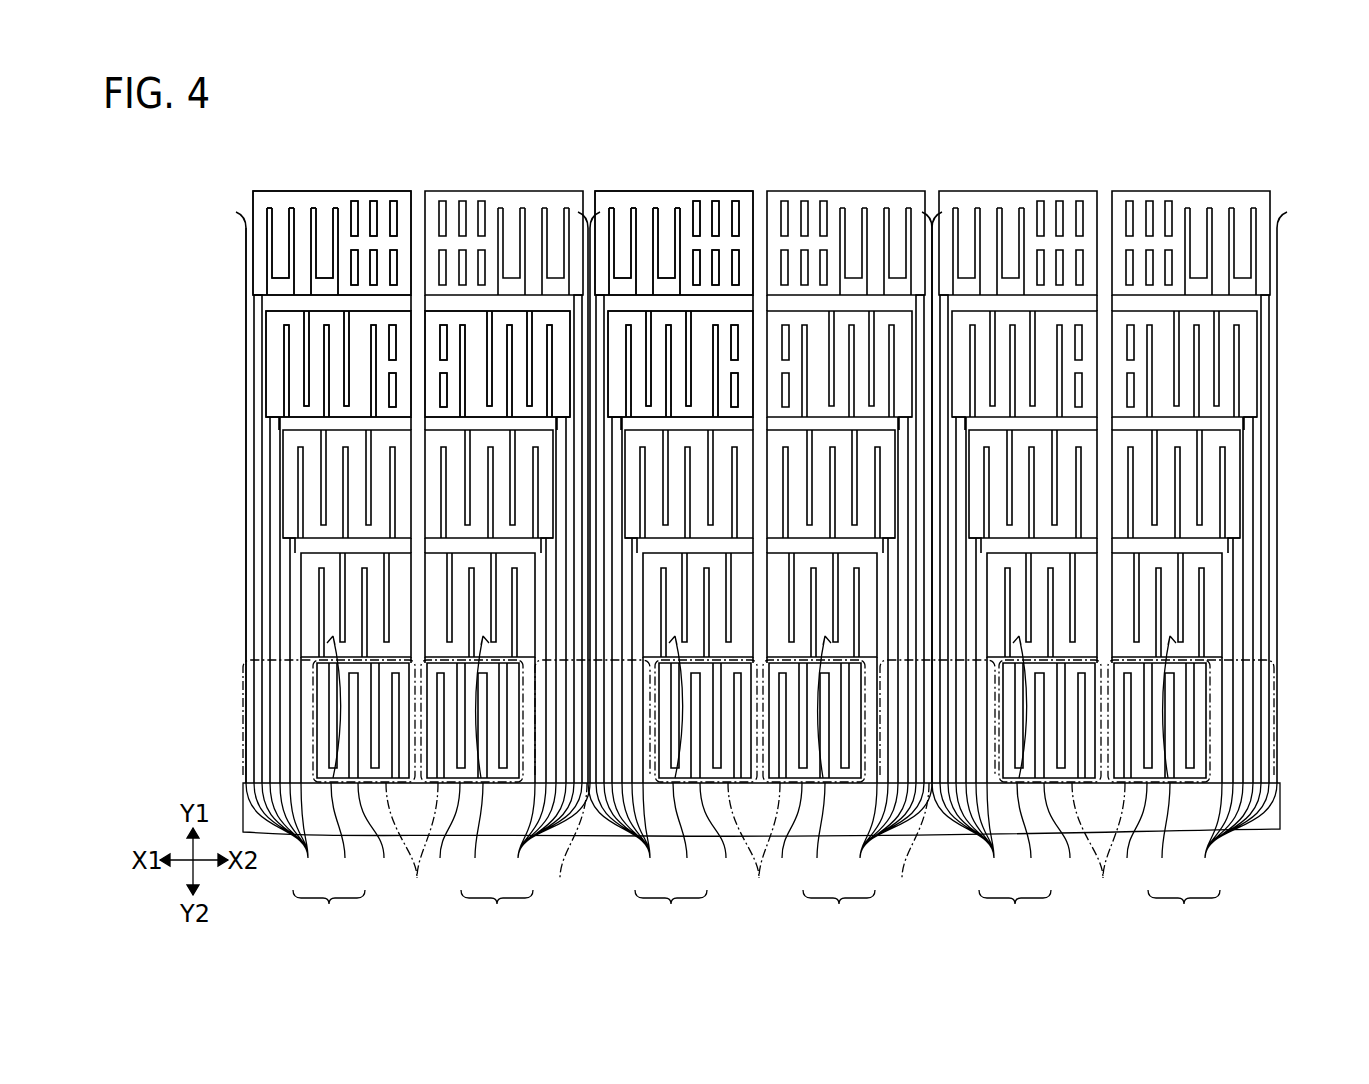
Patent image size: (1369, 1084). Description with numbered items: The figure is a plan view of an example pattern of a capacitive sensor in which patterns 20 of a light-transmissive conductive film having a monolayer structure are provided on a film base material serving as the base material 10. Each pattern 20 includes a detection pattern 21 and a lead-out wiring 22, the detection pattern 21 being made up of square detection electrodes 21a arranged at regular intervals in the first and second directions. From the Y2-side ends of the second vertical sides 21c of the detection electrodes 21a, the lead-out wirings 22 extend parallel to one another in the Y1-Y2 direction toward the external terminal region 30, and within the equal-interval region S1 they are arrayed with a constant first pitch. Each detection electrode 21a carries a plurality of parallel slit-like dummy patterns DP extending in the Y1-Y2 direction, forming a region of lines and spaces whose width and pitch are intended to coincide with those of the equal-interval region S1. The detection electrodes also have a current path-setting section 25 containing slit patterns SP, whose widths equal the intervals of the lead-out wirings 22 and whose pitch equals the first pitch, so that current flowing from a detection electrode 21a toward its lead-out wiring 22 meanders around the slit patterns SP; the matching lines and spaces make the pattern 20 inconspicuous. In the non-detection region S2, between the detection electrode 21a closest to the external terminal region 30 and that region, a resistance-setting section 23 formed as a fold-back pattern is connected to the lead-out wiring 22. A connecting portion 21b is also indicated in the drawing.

The base material 10 is at (361, 128).
The pattern 20 is at (756, 911).
The detection pattern 21 is at (752, 764).
The lead-out wiring 22 is at (1300, 352).
The resistance-setting section 23 is at (752, 837).
The detection electrode 21a is at (314, 207).
The connecting portion 21b is at (432, 205).
The second vertical side 21c is at (236, 212).
The current path-setting section 25 is at (292, 207).
The slit pattern SP is at (907, 207).
The dummy pattern DP is at (372, 200).
The equal-interval region S1 is at (1288, 752).
The non-detection region S2 is at (215, 753).
The external terminal region 30 is at (700, 840).